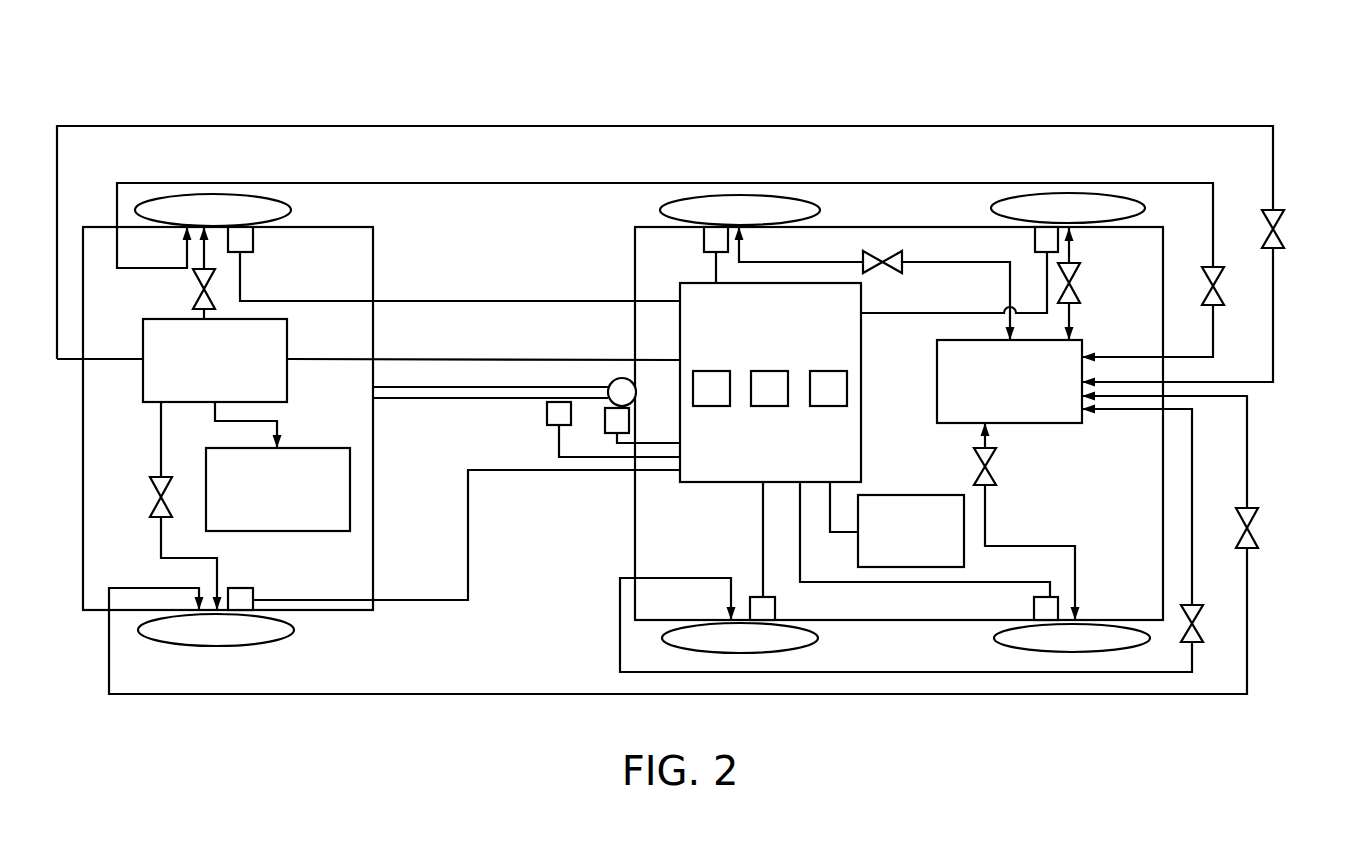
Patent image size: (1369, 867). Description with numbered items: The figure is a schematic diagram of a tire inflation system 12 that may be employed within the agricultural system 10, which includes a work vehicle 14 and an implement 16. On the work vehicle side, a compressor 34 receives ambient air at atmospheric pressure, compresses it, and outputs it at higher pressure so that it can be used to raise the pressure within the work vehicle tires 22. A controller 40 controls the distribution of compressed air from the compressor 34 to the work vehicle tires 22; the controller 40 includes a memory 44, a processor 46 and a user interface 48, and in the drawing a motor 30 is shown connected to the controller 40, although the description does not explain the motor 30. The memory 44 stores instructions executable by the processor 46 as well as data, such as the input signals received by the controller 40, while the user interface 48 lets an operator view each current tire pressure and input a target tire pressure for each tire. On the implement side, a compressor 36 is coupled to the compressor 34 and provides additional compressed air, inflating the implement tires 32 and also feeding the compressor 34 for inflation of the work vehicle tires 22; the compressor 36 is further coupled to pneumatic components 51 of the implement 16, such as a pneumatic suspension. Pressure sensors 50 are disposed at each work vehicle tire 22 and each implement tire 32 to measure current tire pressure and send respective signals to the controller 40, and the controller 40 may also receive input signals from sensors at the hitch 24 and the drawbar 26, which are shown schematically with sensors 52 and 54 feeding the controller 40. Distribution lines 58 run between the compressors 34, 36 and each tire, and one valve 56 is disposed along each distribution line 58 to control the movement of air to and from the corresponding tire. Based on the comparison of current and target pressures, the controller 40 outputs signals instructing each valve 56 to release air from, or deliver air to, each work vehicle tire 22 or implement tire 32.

The agricultural system 10 is at (728, 106).
The tire inflation system 12 is at (1209, 62).
The work vehicle 14 is at (1163, 265).
The implement 16 is at (373, 268).
The work vehicle tire 22 is at (815, 215).
The hitch 24 is at (612, 380).
The drawbar 26 is at (517, 386).
The motor 30 is at (910, 495).
The implement tire 32 is at (285, 212).
The compressor 34 is at (1060, 423).
The compressor 36 is at (288, 378).
The controller 40 is at (718, 483).
The memory 44 is at (770, 406).
The processor 46 is at (712, 406).
The user interface 48 is at (828, 406).
The pressure sensor 50 is at (254, 238).
The pneumatic components 51 is at (296, 531).
The sensor 52 is at (605, 420).
The sensor 54 is at (547, 413).
The valve 56 is at (193, 283).
The distribution line 58 is at (187, 258).